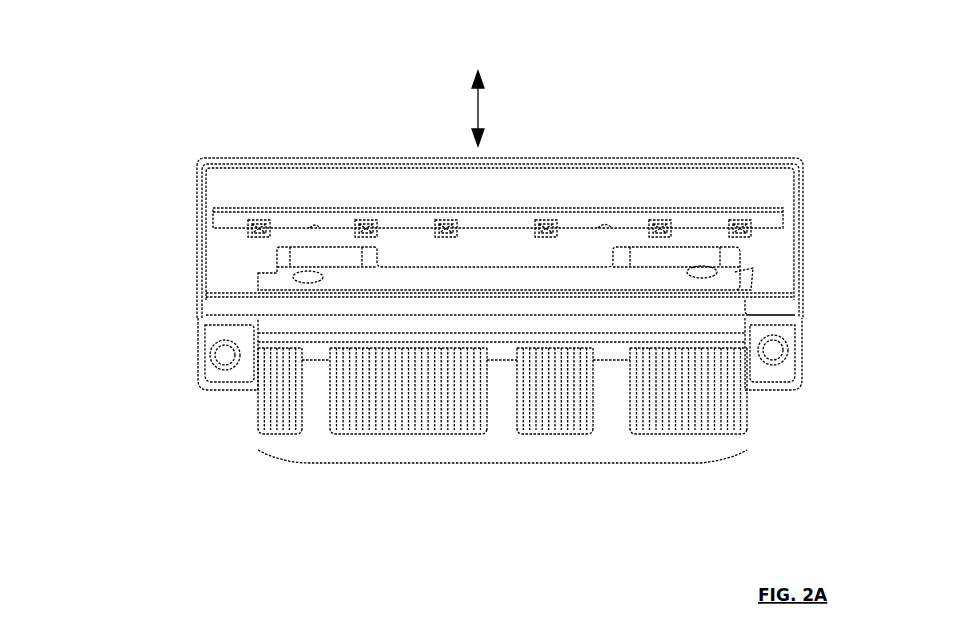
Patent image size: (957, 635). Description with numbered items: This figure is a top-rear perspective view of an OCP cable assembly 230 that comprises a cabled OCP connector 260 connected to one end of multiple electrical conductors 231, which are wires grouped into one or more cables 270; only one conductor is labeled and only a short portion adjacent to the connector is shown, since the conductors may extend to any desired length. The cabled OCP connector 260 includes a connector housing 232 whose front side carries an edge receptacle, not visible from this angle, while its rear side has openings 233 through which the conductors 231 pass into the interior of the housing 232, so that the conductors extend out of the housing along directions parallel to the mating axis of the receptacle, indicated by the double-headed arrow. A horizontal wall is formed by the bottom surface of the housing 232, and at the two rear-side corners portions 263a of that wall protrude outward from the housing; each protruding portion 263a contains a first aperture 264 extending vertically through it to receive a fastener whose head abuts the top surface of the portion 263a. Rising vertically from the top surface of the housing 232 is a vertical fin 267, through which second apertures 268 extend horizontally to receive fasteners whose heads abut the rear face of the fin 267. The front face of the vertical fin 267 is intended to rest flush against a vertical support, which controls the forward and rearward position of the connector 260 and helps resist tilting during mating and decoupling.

The OCP cable assembly 230 is at (748, 52).
The connector housing 232 is at (197, 239).
The vertical fin 267 is at (278, 293).
The second apertures 268 is at (308, 277).
The cabled OCP connector 260 is at (148, 293).
The protruding portions of the horizontal wall 263a is at (213, 392).
The first apertures 264 is at (208, 354).
The openings 233 is at (340, 340).
The electrical conductors 231 is at (395, 432).
The cables 270 is at (502, 463).